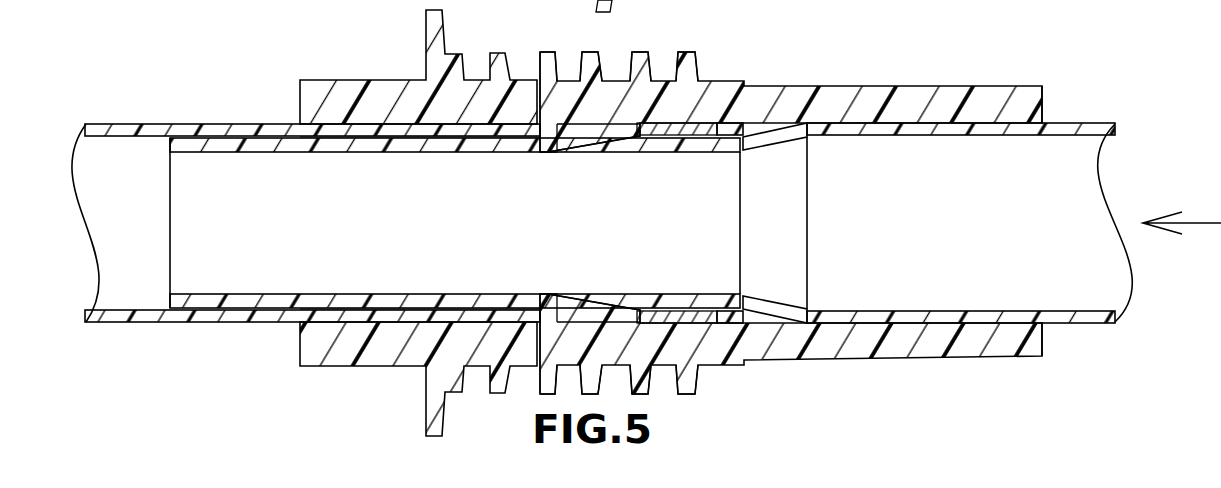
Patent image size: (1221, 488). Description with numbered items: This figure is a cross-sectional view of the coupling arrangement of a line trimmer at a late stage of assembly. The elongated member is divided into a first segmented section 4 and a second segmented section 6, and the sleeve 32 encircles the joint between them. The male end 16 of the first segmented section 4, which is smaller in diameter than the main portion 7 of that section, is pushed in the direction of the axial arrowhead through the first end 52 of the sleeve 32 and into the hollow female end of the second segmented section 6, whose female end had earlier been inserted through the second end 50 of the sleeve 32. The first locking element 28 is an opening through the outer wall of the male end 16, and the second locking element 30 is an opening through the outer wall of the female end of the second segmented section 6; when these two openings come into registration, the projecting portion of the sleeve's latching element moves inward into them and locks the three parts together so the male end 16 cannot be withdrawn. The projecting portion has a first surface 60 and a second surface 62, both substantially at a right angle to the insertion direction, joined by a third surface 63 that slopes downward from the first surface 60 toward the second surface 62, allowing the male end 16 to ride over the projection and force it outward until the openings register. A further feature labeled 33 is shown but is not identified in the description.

The first segmented section 4 is at (1092, 334).
The second segmented section 6 is at (113, 113).
The main portion 7 is at (1064, 123).
The male end 16 is at (157, 245).
The first locking element 28 is at (620, 148).
The second locking element 30 is at (521, 138).
The sleeve 32 is at (735, 56).
The ribs / teeth 33 is at (640, 50).
The second end 50 is at (300, 102).
The first end 52 is at (1044, 103).
The first surface 60 is at (537, 97).
The second surface 62 is at (640, 130).
The third surface 63 is at (560, 155).